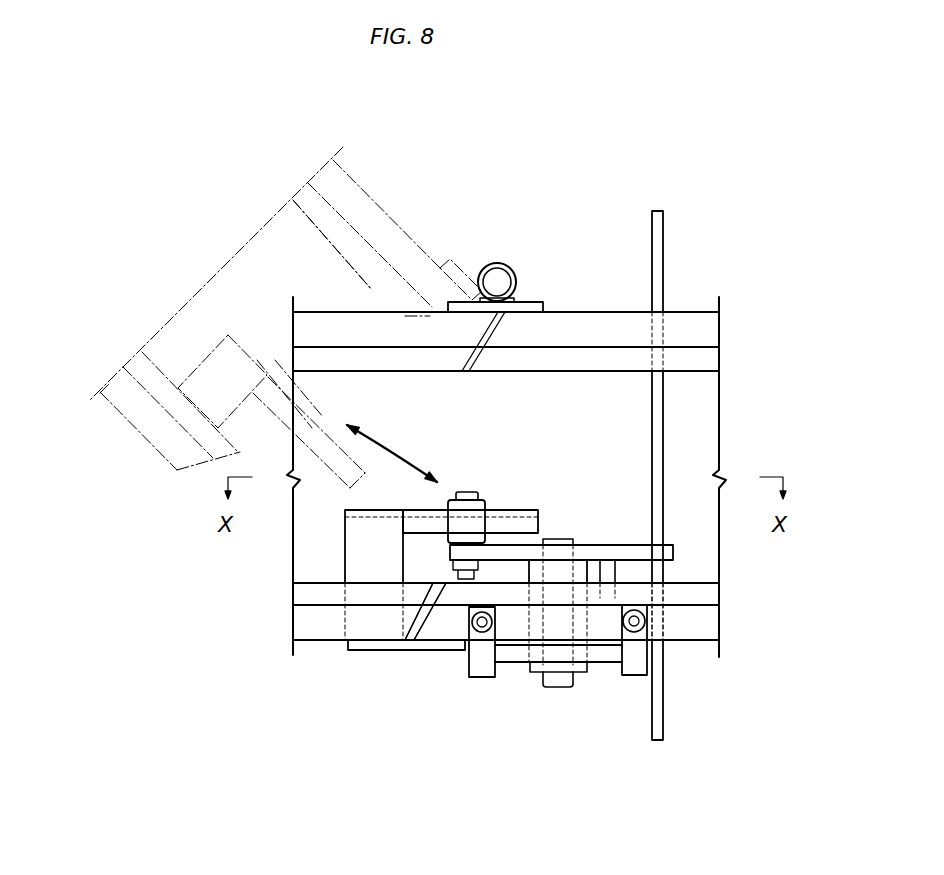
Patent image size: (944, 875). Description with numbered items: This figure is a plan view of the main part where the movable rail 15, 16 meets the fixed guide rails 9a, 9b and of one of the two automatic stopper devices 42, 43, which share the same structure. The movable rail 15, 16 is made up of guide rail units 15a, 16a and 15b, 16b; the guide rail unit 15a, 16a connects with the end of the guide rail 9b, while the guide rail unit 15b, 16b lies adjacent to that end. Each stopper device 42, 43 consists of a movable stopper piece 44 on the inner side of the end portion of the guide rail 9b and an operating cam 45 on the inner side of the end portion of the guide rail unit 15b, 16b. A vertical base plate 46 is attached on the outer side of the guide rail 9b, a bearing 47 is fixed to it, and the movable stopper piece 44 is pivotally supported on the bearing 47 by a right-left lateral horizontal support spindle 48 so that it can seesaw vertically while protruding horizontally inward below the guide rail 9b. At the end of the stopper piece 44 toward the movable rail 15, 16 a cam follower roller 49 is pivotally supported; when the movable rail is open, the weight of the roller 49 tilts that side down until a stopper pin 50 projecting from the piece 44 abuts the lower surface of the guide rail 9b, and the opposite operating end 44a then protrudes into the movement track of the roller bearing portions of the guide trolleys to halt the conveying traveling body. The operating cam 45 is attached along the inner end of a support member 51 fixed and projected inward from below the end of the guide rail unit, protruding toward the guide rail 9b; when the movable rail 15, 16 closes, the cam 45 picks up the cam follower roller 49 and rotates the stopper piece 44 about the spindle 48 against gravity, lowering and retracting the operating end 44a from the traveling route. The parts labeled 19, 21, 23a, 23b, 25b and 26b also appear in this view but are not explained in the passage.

The guide rail 9a is at (610, 323).
The guide rail 9b is at (698, 617).
The movable rail 15 is at (382, 311).
The movable rail 16 is at (387, 229).
The guide rail unit 15a is at (337, 327).
The arm upper portion 16a is at (239, 262).
The guide rail unit 15b is at (150, 418).
The guide rail unit 16b is at (370, 393).
The pivot shaft 19 is at (495, 281).
The pivot shaft 21 is at (504, 246).
The engaging portion 23a is at (407, 647).
The engaging portion 23b is at (394, 656).
The support plate 25b is at (424, 600).
The support plate 26b is at (346, 647).
The automatic stopper device 42 is at (638, 537).
The automatic stopper device 43 is at (654, 534).
The movable stopper piece 44 is at (578, 552).
The operating end 44a is at (673, 553).
The operating cam 45 is at (310, 428).
The vertical base plate 46 is at (560, 655).
The bearing 47 is at (582, 618).
The horizontal support spindle 48 is at (557, 540).
The cam follower roller 49 is at (465, 505).
The stopper pin 50 is at (608, 568).
The support member 51 is at (210, 373).